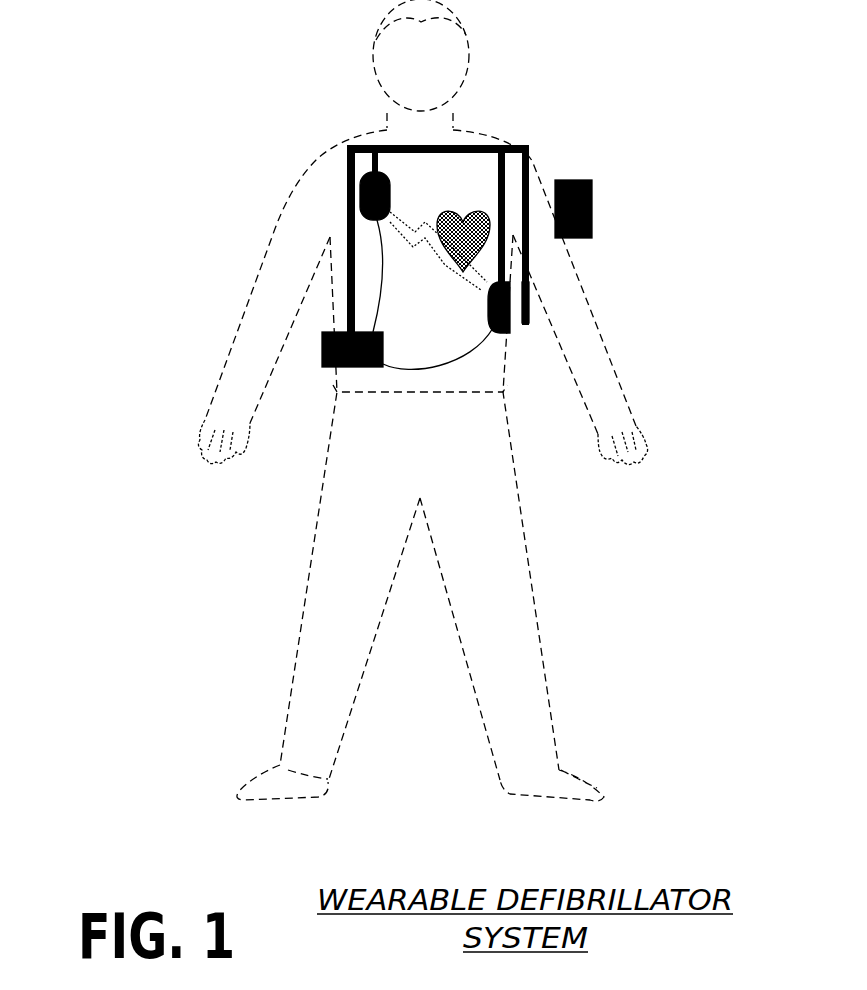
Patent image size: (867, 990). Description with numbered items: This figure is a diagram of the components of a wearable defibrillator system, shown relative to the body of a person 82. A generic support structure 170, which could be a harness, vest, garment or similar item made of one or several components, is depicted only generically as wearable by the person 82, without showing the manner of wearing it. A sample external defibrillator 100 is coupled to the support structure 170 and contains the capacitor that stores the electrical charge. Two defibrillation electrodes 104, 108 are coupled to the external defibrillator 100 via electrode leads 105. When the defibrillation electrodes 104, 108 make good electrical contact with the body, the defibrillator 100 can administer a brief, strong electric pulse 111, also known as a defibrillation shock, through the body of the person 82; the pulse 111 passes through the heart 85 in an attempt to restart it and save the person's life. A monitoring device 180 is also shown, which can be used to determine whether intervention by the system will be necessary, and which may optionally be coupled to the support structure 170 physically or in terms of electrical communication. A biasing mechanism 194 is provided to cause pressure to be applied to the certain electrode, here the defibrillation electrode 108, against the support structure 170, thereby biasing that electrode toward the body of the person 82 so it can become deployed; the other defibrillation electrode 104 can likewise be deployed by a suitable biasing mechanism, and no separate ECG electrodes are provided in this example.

The person 82 is at (272, 216).
The support structure 170 is at (345, 170).
The defibrillation electrode 104 is at (401, 199).
The heart 85 is at (467, 208).
The electric pulse 111 is at (436, 258).
The electrode leads 105 is at (448, 354).
The external defibrillator 100 is at (322, 349).
The defibrillation electrode 108 is at (512, 323).
The monitoring device 180 is at (592, 195).
The biasing mechanism 194 is at (529, 310).